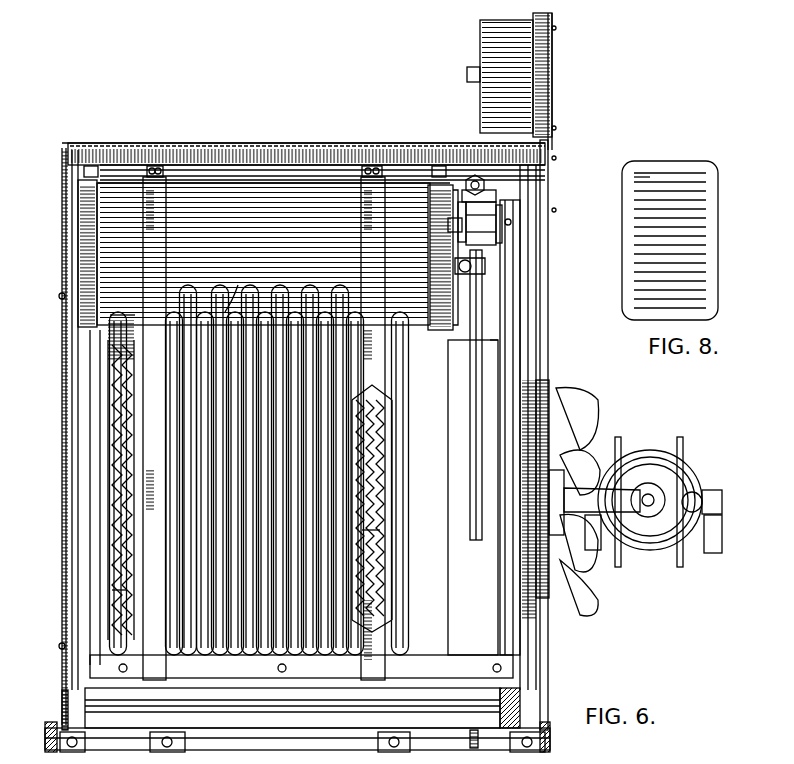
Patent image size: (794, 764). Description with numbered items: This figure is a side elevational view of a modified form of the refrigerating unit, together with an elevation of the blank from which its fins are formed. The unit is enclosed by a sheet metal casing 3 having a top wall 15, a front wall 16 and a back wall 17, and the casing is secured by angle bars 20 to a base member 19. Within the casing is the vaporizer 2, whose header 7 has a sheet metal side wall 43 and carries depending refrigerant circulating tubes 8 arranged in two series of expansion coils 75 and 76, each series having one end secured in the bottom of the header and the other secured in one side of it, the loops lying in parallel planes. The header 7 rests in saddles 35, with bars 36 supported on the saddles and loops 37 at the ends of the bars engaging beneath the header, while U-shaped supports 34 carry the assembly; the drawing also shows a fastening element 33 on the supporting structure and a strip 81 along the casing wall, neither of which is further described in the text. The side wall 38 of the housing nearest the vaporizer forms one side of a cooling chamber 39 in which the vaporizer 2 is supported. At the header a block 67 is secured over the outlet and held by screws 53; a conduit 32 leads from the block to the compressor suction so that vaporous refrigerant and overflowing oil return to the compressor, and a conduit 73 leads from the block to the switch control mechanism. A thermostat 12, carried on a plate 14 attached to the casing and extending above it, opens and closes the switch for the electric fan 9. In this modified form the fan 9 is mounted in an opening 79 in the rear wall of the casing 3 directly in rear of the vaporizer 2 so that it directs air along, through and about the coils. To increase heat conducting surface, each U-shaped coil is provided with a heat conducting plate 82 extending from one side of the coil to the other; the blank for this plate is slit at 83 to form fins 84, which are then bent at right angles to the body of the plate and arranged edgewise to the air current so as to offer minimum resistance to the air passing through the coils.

In FIG. 6, the vaporizer 2 is at (263, 254).
In FIG. 6, the casing 3 is at (60, 300).
In FIG. 6, the header 7 is at (238, 195).
In FIG. 6, the refrigerant circulating tubes 8 is at (400, 615).
In FIG. 6, the fan 9 is at (668, 450).
In FIG. 6, the thermostat 12 is at (492, 52).
In FIG. 6, the plate 14 is at (554, 141).
In FIG. 6, the top wall 15 is at (188, 145).
In FIG. 6, the front wall 16 is at (62, 252).
In FIG. 6, the back wall 17 is at (540, 322).
In FIG. 6, the base member 19 is at (50, 730).
In FIG. 6, the angle bars 20 is at (62, 702).
In FIG. 6, the conduit 32 is at (476, 345).
In FIG. 6, the nut 33 is at (490, 268).
In FIG. 6, the U-shaped supports 34 is at (165, 252).
In FIG. 6, the saddles 35 is at (152, 166).
In FIG. 6, the bars 36 is at (312, 183).
In FIG. 6, the loops 37 is at (86, 236).
In FIG. 6, the side wall 38 is at (500, 320).
In FIG. 6, the cooling chamber 39 is at (480, 340).
In FIG. 6, the side wall 43 is at (205, 195).
In FIG. 6, the screws 53 is at (462, 195).
In FIG. 6, the block 67 is at (498, 228).
In FIG. 6, the conduit 73 is at (486, 180).
In FIG. 6, the expansion coils 75 is at (328, 300).
In FIG. 6, the expansion coils 76 is at (232, 288).
In FIG. 6, the opening 79 is at (520, 560).
In FIG. 6, the strip 81 is at (62, 522).
In FIG. 6, the heat conducting plate 82 is at (110, 515).
In FIG. 8, the heat conducting plate 82 is at (670, 170).
In FIG. 8, the slits 83 is at (700, 210).
In FIG. 6, the fins 84 is at (112, 575).
In FIG. 8, the fins 84 is at (640, 188).